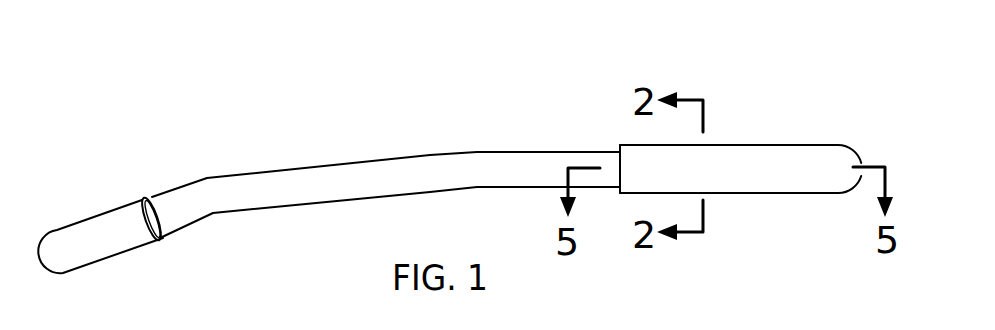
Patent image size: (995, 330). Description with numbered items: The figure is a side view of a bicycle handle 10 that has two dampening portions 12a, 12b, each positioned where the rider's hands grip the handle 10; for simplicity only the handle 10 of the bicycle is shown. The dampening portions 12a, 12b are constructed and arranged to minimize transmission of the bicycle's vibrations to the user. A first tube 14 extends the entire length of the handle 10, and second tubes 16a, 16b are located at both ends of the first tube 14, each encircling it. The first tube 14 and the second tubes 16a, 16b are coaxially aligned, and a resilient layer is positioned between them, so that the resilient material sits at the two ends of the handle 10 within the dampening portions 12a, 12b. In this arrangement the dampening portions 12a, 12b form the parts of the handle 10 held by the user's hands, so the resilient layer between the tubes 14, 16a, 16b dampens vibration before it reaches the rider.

The handle 10 is at (267, 130).
The first dampening portion 12a is at (87, 232).
The second dampening portion 12b is at (780, 120).
The first tubular member 14 is at (367, 167).
The second tubular member 16a is at (126, 203).
The second tubular member 16b is at (783, 195).